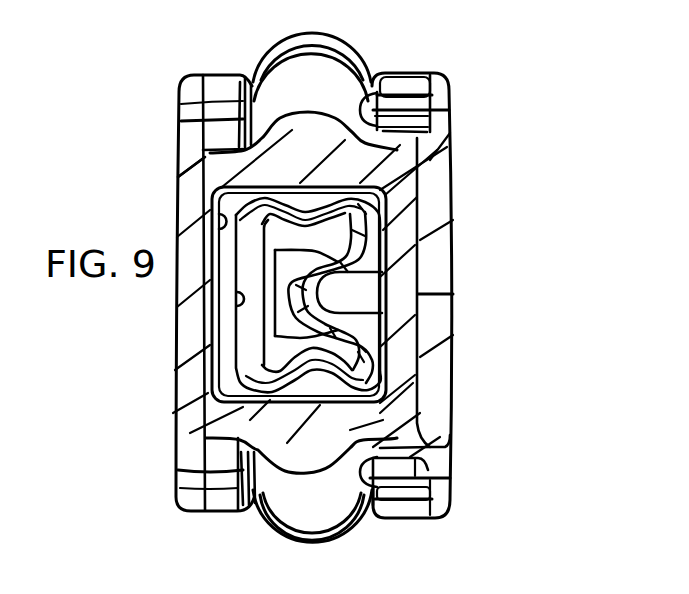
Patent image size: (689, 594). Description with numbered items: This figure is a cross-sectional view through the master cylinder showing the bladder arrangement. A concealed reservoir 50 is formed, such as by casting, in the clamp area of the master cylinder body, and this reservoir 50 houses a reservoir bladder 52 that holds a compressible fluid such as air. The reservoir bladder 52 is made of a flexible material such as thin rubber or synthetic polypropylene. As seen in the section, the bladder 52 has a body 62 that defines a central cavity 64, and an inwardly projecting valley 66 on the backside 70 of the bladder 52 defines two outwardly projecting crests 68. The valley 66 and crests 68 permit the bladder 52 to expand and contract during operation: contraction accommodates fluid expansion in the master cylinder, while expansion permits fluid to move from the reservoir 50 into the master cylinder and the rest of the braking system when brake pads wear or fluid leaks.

The concealed reservoir 50 is at (217, 205).
The reservoir bladder 52 is at (237, 359).
The body 62 is at (236, 330).
The central cavity 64 is at (238, 297).
The inwardly projecting valley 66 is at (345, 290).
The outwardly projecting crests 68 is at (365, 210).
The backside 70 is at (325, 301).